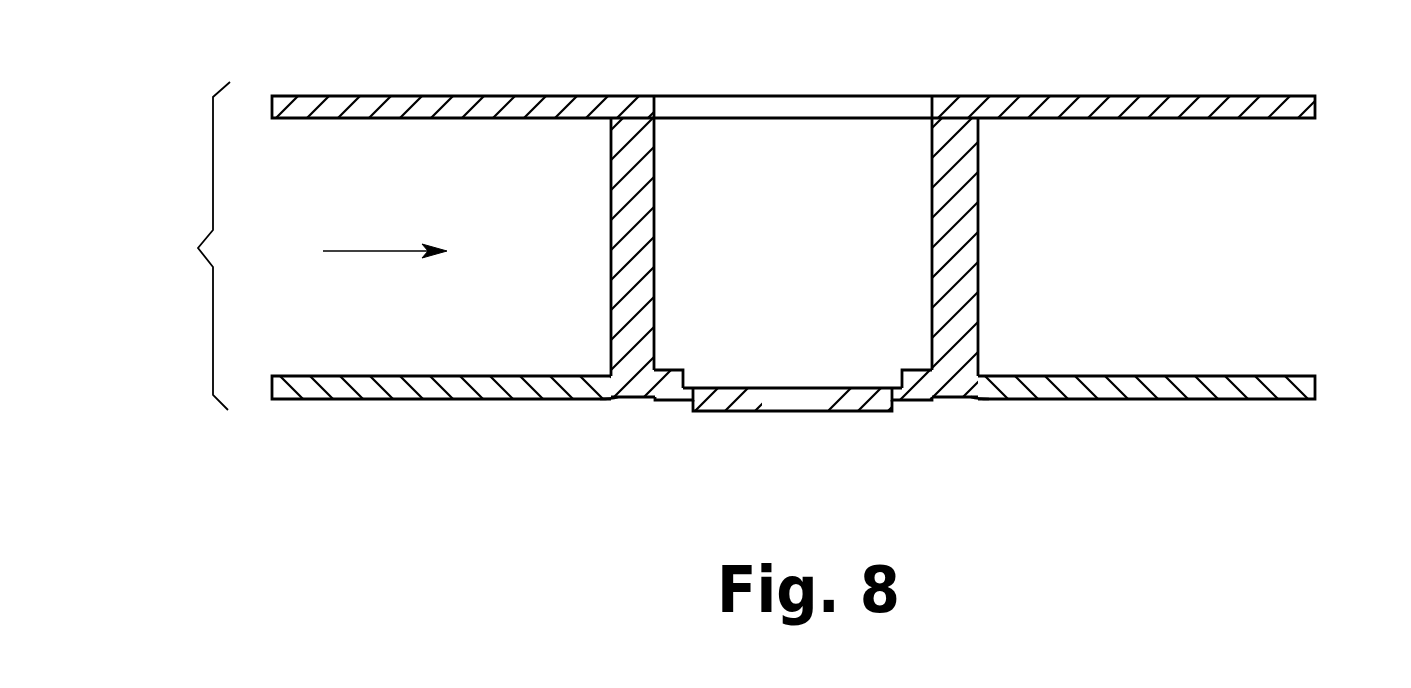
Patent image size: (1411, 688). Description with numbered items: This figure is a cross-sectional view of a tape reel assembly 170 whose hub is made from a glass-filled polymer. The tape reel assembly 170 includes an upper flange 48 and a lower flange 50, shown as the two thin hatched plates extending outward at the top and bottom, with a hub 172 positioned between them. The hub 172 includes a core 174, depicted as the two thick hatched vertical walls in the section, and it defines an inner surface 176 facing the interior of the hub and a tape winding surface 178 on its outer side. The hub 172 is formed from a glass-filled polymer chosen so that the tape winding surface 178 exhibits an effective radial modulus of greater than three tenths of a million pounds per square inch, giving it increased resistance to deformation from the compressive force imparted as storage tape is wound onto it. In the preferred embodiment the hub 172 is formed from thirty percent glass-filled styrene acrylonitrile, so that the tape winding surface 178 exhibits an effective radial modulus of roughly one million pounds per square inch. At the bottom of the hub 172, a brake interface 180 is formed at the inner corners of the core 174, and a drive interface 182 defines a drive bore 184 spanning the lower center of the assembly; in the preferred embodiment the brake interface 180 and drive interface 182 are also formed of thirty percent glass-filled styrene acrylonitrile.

The upper flange 48 is at (1317, 103).
The lower flange 50 is at (1317, 383).
The tape reel assembly 170 is at (181, 246).
The hub 172 is at (354, 251).
The core 174 is at (611, 249).
The inner surface 176 is at (653, 153).
The tape winding surface 178 is at (611, 337).
The brake interface 180 is at (670, 367).
The drive interface 182 is at (663, 402).
The drive bore 184 is at (797, 406).